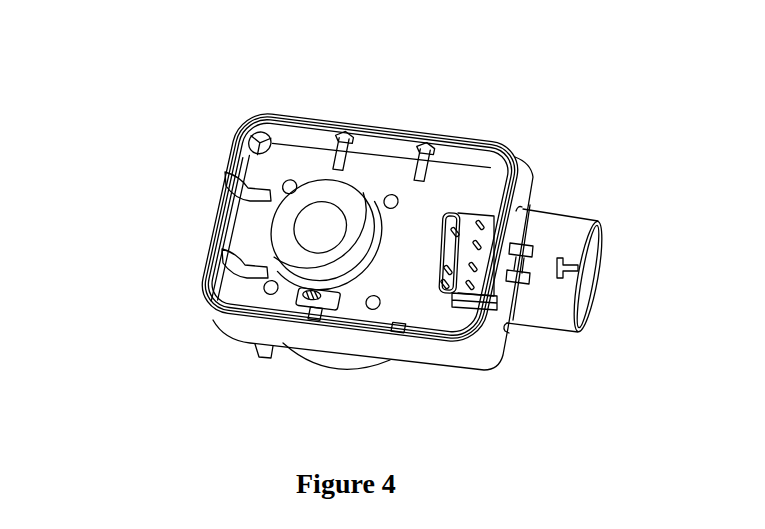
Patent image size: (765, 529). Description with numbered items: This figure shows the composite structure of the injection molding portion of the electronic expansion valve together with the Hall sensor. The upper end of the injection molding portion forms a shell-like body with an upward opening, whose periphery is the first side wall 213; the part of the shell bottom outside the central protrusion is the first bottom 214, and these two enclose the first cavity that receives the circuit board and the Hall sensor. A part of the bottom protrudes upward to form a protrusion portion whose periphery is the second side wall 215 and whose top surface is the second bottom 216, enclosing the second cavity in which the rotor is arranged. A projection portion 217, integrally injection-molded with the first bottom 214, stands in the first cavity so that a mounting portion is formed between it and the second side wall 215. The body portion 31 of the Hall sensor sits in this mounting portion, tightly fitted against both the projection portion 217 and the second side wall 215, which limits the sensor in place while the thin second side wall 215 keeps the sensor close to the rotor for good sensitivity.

The first side wall 213 is at (282, 114).
The first bottom 214 is at (390, 182).
The second side wall 215 is at (310, 292).
The second bottom 216 is at (287, 240).
The projection portion 217 is at (303, 300).
The body portion 31 is at (317, 303).